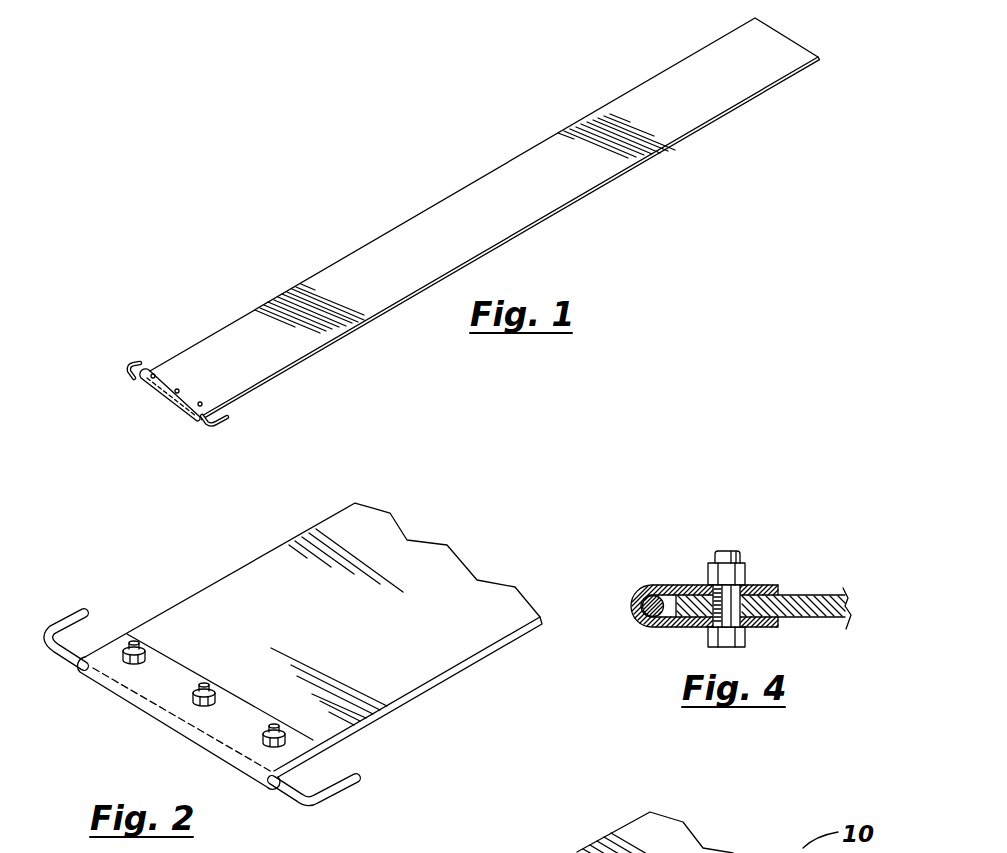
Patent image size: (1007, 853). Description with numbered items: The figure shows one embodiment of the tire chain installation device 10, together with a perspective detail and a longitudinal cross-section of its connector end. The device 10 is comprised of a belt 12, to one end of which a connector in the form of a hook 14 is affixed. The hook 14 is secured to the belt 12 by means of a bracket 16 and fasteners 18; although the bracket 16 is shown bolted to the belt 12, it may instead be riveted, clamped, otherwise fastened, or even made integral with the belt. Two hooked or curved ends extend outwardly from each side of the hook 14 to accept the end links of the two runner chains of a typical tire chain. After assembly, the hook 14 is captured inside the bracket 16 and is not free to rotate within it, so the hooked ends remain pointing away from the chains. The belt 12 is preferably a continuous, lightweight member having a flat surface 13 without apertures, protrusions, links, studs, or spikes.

In FIG. 1, the tire chain installation device 10 is at (440, 226).
In FIG. 2, the tire chain installation device 10 is at (294, 659).
In FIG. 1, the belt 12 is at (247, 330).
In FIG. 2, the belt 12 is at (398, 677).
In FIG. 4, the belt 12 is at (802, 598).
In FIG. 1, the flat surface 13 is at (398, 287).
In FIG. 2, the flat surface 13 is at (327, 622).
In FIG. 1, the hook 14 is at (128, 376).
In FIG. 2, the hook 14 is at (72, 623).
In FIG. 4, the hook 14 is at (655, 602).
In FIG. 2, the bracket 16 is at (155, 715).
In FIG. 4, the bracket 16 is at (670, 625).
In FIG. 2, the fasteners 18 is at (130, 637).
In FIG. 4, the fasteners 18 is at (723, 555).